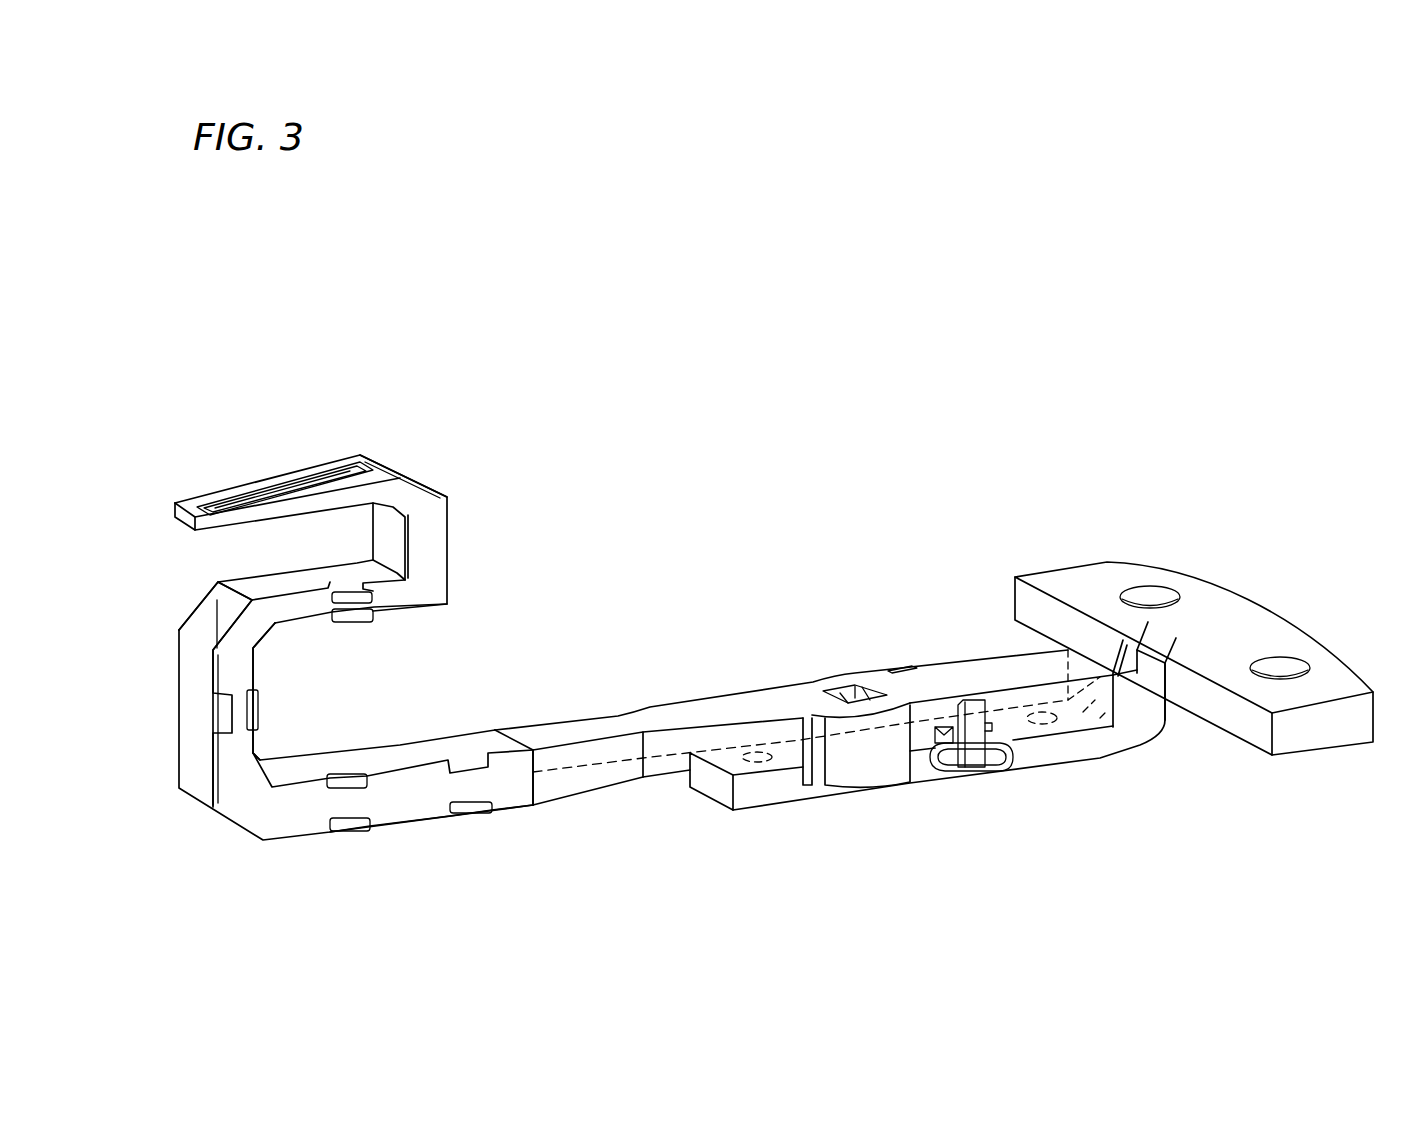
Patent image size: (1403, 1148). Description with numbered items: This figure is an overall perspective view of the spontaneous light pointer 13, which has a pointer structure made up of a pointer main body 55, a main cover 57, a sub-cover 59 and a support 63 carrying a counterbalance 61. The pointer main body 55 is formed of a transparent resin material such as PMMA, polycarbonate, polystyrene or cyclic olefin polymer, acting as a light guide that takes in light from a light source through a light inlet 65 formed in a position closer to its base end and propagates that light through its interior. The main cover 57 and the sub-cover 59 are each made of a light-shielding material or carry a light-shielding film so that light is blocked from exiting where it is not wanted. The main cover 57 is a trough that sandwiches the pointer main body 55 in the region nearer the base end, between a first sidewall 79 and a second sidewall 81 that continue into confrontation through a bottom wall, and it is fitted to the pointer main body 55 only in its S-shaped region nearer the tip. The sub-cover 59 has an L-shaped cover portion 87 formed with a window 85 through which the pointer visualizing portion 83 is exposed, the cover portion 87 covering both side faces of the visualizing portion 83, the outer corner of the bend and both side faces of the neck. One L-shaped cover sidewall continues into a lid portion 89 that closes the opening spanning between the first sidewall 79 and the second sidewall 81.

The spontaneous light pointer 13 is at (541, 362).
The pointer main body 55 is at (602, 782).
The main cover 57 is at (172, 776).
The sub-cover 59 is at (456, 491).
The counterbalance 61 is at (1248, 607).
The support 63 is at (1044, 764).
The light inlet 65 is at (862, 687).
The first sidewall 79 is at (193, 670).
The second sidewall 81 is at (307, 768).
The pointer visualizing portion 83 is at (340, 455).
The window 85 is at (300, 480).
The L-shaped cover portion 87 is at (403, 473).
The lid portion 89 is at (393, 790).